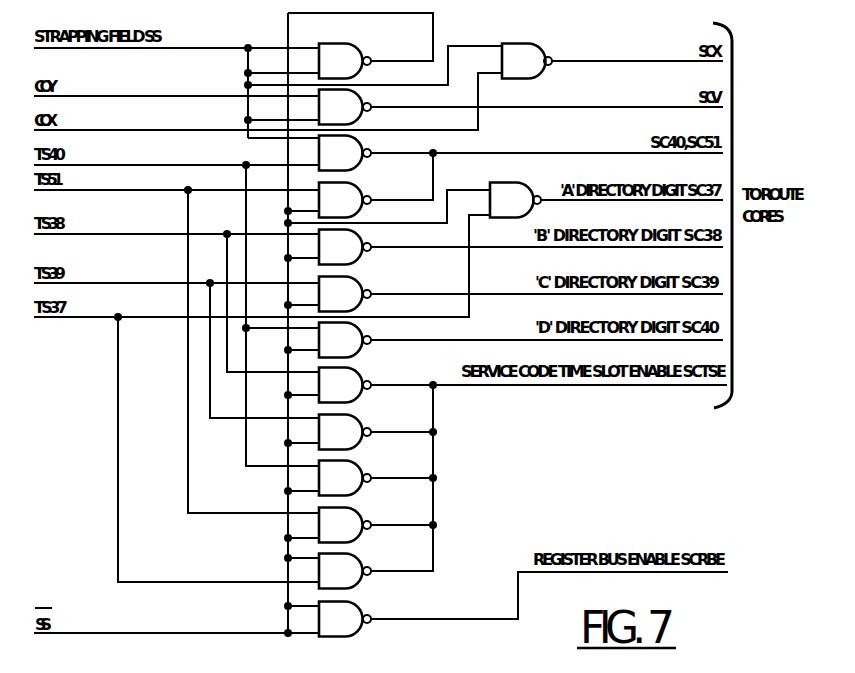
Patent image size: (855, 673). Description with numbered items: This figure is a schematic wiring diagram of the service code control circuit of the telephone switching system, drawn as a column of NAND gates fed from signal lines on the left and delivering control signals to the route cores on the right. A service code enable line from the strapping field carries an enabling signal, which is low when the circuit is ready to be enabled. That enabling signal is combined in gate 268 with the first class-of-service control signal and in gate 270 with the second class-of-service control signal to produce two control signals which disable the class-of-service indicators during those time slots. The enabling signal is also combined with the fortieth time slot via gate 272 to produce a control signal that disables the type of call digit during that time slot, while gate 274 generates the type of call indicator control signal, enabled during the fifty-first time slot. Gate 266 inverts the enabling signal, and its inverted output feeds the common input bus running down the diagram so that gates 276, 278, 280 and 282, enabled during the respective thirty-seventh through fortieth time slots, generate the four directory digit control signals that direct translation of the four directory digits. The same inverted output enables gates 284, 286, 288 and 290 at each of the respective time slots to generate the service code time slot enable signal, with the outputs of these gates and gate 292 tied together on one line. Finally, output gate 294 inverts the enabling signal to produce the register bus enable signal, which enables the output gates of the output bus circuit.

The gate 266 is at (352, 42).
The gate 268 is at (532, 42).
The gate 270 is at (362, 124).
The gate 272 is at (356, 172).
The gate 274 is at (362, 217).
The gate 276 is at (511, 183).
The gate 278 is at (360, 260).
The gate 280 is at (360, 278).
The gate 282 is at (358, 357).
The gate 284 is at (357, 401).
The gate 286 is at (354, 448).
The gate 288 is at (351, 494).
The gate 290 is at (355, 589).
The NAND gate (service code time slot enable) 292 is at (351, 541).
The output gate 294 is at (350, 640).